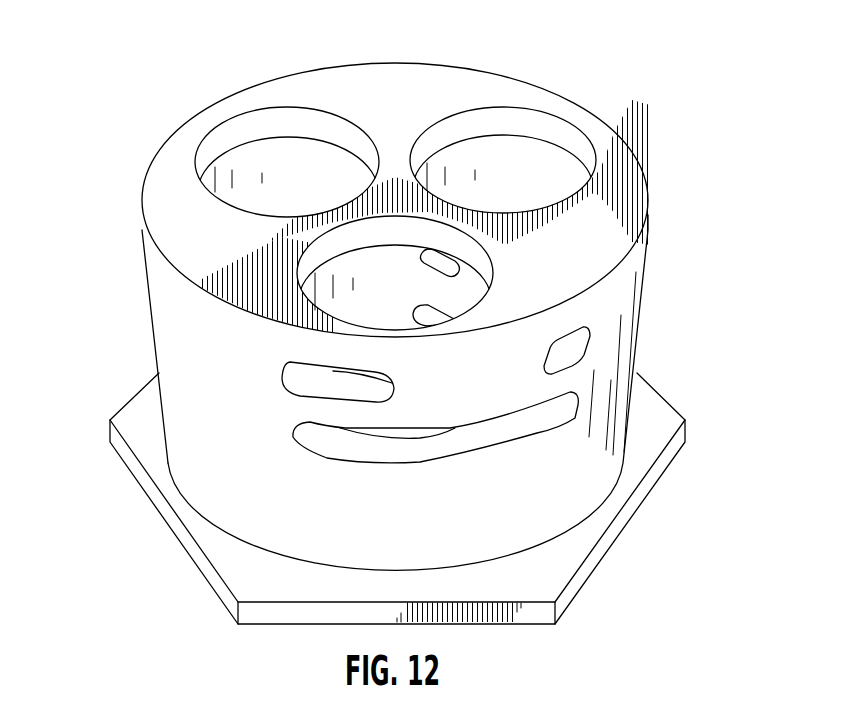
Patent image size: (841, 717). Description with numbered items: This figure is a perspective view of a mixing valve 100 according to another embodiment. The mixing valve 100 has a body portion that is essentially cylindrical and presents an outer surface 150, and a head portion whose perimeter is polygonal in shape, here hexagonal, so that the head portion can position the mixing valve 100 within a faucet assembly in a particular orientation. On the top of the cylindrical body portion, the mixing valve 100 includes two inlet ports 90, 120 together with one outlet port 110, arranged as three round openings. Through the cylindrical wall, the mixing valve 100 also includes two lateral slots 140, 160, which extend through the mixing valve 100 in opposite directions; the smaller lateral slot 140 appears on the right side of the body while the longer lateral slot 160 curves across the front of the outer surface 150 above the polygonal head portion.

The mixing valve 100 is at (122, 508).
The inlet port 90 is at (295, 168).
The outlet port 110 is at (547, 152).
The inlet port 120 is at (380, 260).
The lateral slot 140 is at (580, 343).
The outer surface 150 is at (168, 373).
The lateral slot 160 is at (485, 433).